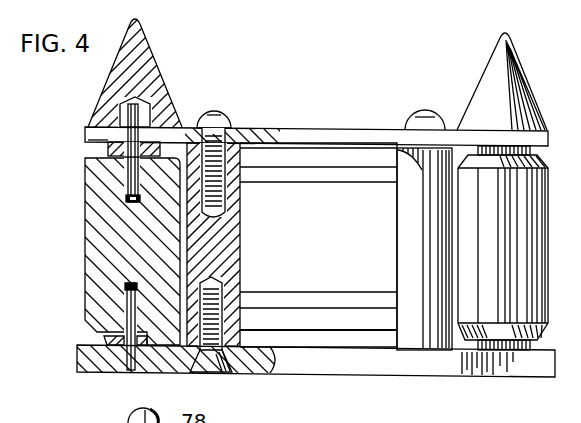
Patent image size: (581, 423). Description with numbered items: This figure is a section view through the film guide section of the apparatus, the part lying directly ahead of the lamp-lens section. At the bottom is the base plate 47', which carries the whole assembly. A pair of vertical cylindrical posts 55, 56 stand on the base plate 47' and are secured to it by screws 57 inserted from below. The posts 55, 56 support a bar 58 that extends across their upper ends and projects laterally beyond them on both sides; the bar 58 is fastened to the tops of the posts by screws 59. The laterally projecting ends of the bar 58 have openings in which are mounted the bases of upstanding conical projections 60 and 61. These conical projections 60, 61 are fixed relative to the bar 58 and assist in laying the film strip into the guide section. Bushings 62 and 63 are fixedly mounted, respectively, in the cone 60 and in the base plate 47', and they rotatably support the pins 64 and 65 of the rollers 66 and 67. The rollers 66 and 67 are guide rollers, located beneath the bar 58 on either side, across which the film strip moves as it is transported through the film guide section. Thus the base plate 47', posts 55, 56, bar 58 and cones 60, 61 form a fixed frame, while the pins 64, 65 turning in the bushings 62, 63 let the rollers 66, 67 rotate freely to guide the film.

The base plate 47' is at (300, 371).
The cylindrical post 55 is at (228, 245).
The cylindrical post 56 is at (434, 236).
The screw 57 is at (200, 372).
The bar 58 is at (327, 133).
The screw 59 is at (228, 118).
The conical projection 60 is at (157, 78).
The conical projection 61 is at (527, 72).
The bushing 62 is at (112, 145).
The bushing 63 is at (106, 340).
The pin 64 is at (128, 165).
The pin 65 is at (127, 298).
The roller 66 is at (85, 227).
The roller 67 is at (537, 237).